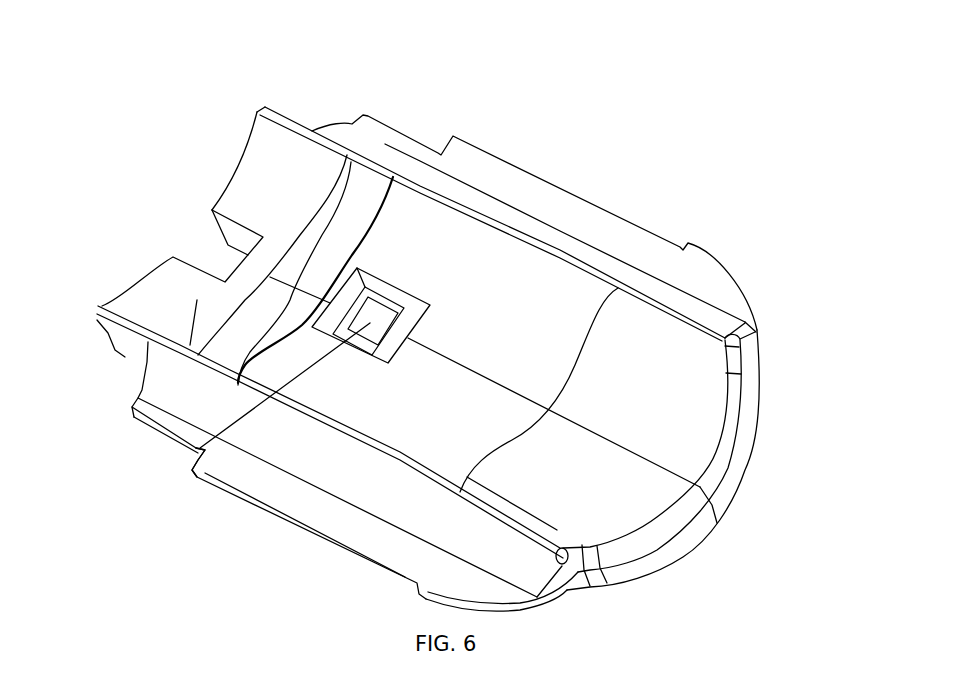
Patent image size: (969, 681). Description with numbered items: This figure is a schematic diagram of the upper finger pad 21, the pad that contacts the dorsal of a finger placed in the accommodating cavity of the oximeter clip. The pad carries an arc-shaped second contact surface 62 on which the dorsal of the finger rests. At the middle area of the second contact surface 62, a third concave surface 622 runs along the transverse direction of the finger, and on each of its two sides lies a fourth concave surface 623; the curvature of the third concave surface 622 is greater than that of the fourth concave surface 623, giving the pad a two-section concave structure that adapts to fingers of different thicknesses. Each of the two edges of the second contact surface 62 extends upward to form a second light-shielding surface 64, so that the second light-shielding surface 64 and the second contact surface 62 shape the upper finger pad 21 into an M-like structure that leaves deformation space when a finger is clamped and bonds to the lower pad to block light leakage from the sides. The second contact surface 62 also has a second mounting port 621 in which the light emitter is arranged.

The upper finger pad 21 is at (552, 148).
The second contact surface 62 is at (500, 352).
The second light-shielding surface 64 is at (565, 245).
The second mounting port 621 is at (200, 448).
The third concave surface 622 is at (395, 277).
The fourth concave surface 623 is at (437, 218).